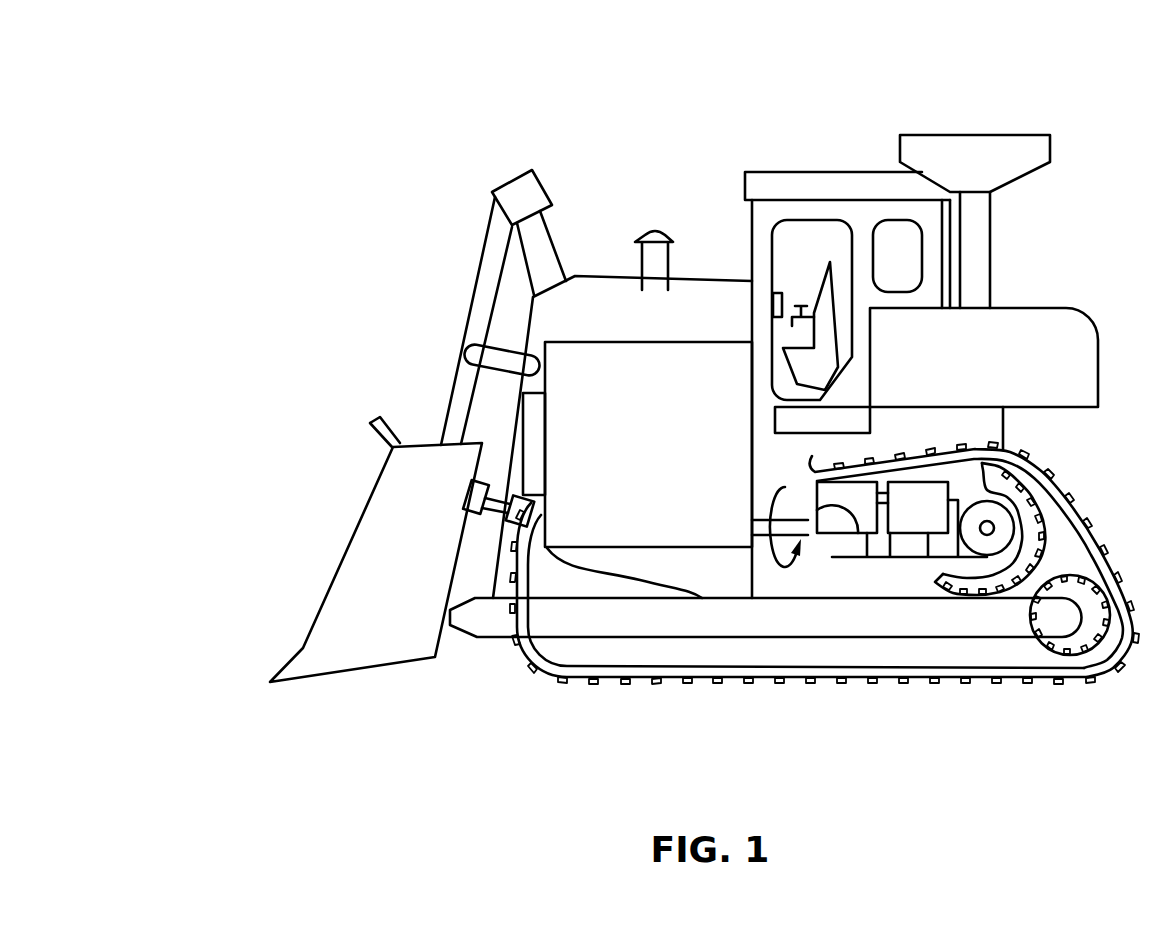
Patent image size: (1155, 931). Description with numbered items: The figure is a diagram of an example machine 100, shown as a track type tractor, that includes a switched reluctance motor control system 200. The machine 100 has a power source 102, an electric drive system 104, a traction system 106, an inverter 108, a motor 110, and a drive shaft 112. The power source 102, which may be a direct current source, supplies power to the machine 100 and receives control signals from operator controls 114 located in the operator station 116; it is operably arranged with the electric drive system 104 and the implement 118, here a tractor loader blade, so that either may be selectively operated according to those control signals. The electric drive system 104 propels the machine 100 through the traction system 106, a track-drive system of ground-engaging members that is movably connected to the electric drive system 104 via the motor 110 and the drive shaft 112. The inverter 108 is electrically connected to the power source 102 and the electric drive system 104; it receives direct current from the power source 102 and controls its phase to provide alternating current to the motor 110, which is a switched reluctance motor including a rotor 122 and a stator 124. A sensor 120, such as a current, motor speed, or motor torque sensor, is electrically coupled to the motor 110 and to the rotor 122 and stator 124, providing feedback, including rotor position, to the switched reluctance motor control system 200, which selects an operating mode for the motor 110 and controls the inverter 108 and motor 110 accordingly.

The machine 100 is at (236, 70).
The power source 102 is at (648, 444).
The electric drive system 104 is at (910, 583).
The traction system 106 is at (1093, 537).
The inverter 108 is at (530, 427).
The motor 110 is at (869, 669).
The drive shaft 112 is at (758, 537).
The operator controls 114 is at (760, 283).
The operator station 116 is at (819, 205).
The implement 118 is at (366, 485).
The sensor 120 is at (852, 507).
The rotor 122 is at (869, 669).
The stator 124 is at (827, 545).
The switched reluctance motor control system 200 is at (918, 507).